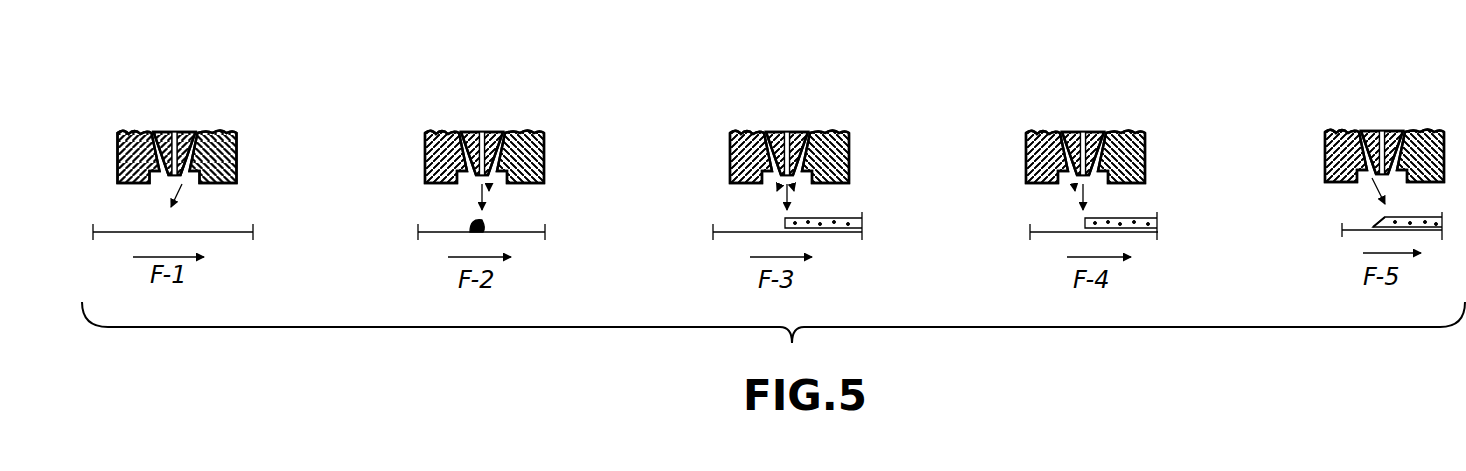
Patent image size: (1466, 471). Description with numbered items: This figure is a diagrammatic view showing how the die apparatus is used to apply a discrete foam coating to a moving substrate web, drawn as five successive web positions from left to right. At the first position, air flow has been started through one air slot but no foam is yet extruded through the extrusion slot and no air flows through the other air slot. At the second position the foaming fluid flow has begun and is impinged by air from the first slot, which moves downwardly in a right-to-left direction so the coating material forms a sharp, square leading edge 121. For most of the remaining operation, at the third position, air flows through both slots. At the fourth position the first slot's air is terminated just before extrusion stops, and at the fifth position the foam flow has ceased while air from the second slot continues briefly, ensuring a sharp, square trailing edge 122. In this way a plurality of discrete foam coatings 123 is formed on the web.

The leading edge 121 is at (484, 225).
The trailing edge 122 is at (1375, 223).
The discrete foam coatings 123 is at (1420, 216).